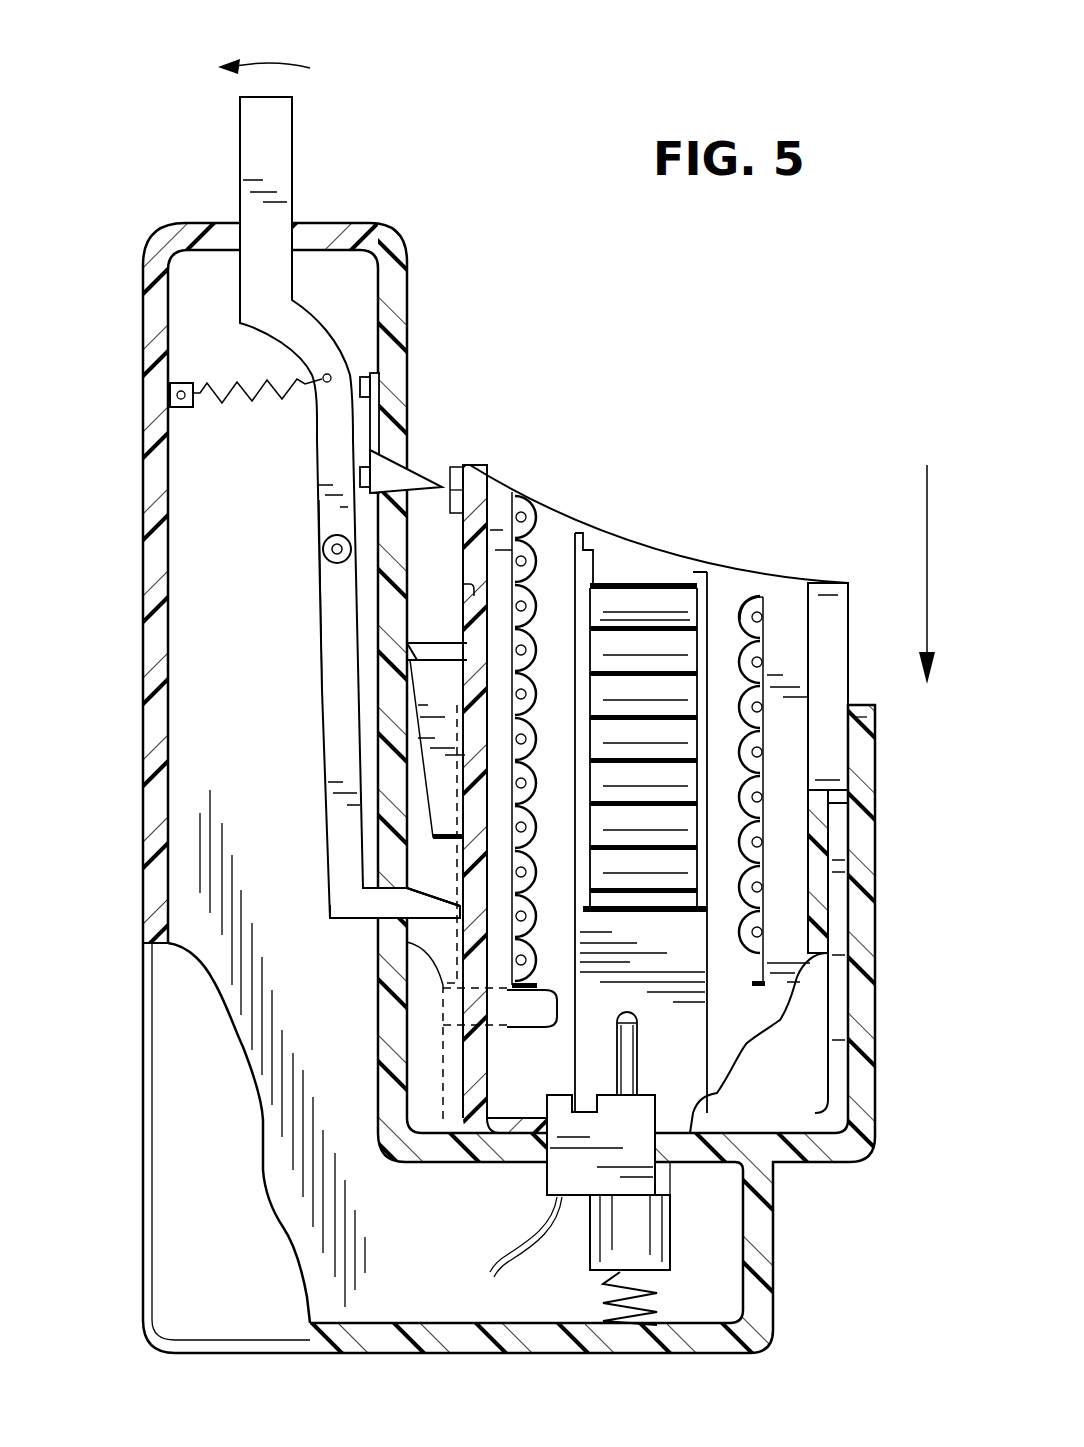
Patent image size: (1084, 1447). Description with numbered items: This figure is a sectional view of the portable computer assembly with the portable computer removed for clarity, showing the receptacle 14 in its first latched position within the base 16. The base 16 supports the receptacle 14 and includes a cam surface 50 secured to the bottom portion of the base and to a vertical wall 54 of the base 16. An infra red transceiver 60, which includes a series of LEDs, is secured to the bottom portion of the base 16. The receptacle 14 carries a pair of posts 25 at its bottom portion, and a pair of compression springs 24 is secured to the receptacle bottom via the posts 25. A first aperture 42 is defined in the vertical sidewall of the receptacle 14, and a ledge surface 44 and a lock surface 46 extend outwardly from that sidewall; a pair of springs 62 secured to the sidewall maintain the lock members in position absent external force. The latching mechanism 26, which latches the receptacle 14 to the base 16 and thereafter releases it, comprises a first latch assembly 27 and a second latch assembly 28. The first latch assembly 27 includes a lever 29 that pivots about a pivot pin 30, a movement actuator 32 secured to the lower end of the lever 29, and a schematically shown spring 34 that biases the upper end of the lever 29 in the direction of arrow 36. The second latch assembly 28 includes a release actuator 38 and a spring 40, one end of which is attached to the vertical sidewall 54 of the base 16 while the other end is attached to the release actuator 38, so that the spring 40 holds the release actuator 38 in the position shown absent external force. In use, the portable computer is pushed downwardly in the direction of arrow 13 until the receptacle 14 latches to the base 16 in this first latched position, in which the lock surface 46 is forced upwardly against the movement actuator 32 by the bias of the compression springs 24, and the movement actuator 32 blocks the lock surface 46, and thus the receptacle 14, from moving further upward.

The arrow 13 is at (673, 799).
The receptacle 14 is at (777, 1090).
The base 16 is at (200, 1190).
The compression springs 24 is at (657, 1290).
The posts 25 is at (653, 1223).
The latching mechanism 26 is at (222, 598).
The first latch assembly 27 is at (315, 614).
The second latch assembly 28 is at (350, 450).
The lever 29 is at (248, 143).
The pivot pin 30 is at (323, 553).
The movement actuator 32 is at (380, 903).
The spring 34 is at (245, 383).
The arrow 36 is at (268, 62).
The release actuator 38 is at (413, 480).
The spring 40 is at (377, 433).
The first aperture 42 is at (470, 585).
The ledge surface 44 is at (432, 660).
The lock surface 46 is at (420, 1022).
The cam surface 50 is at (420, 1117).
The vertical wall 54 is at (407, 332).
The infra red (IR) transceiver 60 is at (563, 1170).
The springs 62 is at (458, 888).